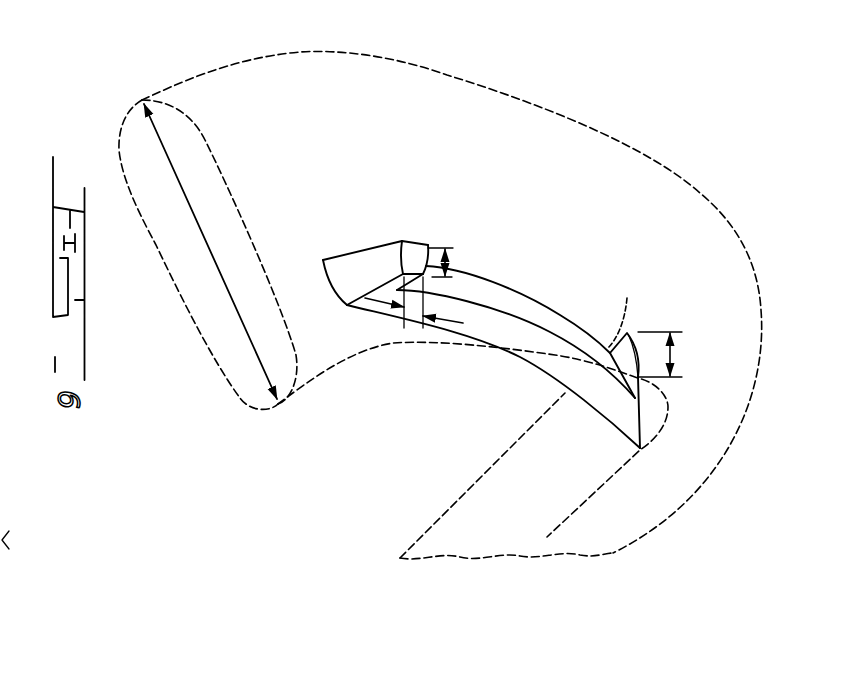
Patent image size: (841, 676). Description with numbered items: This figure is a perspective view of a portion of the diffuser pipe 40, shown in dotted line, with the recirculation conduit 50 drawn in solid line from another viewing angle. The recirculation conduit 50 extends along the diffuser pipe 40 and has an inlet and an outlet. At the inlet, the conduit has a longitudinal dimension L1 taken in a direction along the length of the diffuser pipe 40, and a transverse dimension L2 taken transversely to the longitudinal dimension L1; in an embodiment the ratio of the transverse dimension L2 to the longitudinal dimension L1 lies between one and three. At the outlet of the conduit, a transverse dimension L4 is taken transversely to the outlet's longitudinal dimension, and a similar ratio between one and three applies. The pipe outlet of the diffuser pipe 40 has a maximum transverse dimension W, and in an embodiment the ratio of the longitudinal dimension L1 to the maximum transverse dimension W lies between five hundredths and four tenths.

The diffuser pipe 40 is at (707, 202).
The recirculation conduit 50 is at (600, 417).
The maximum transverse dimension W is at (208, 255).
The longitudinal dimension L1 is at (417, 313).
The transverse dimension L2 is at (445, 262).
The transverse dimension L4 is at (672, 355).